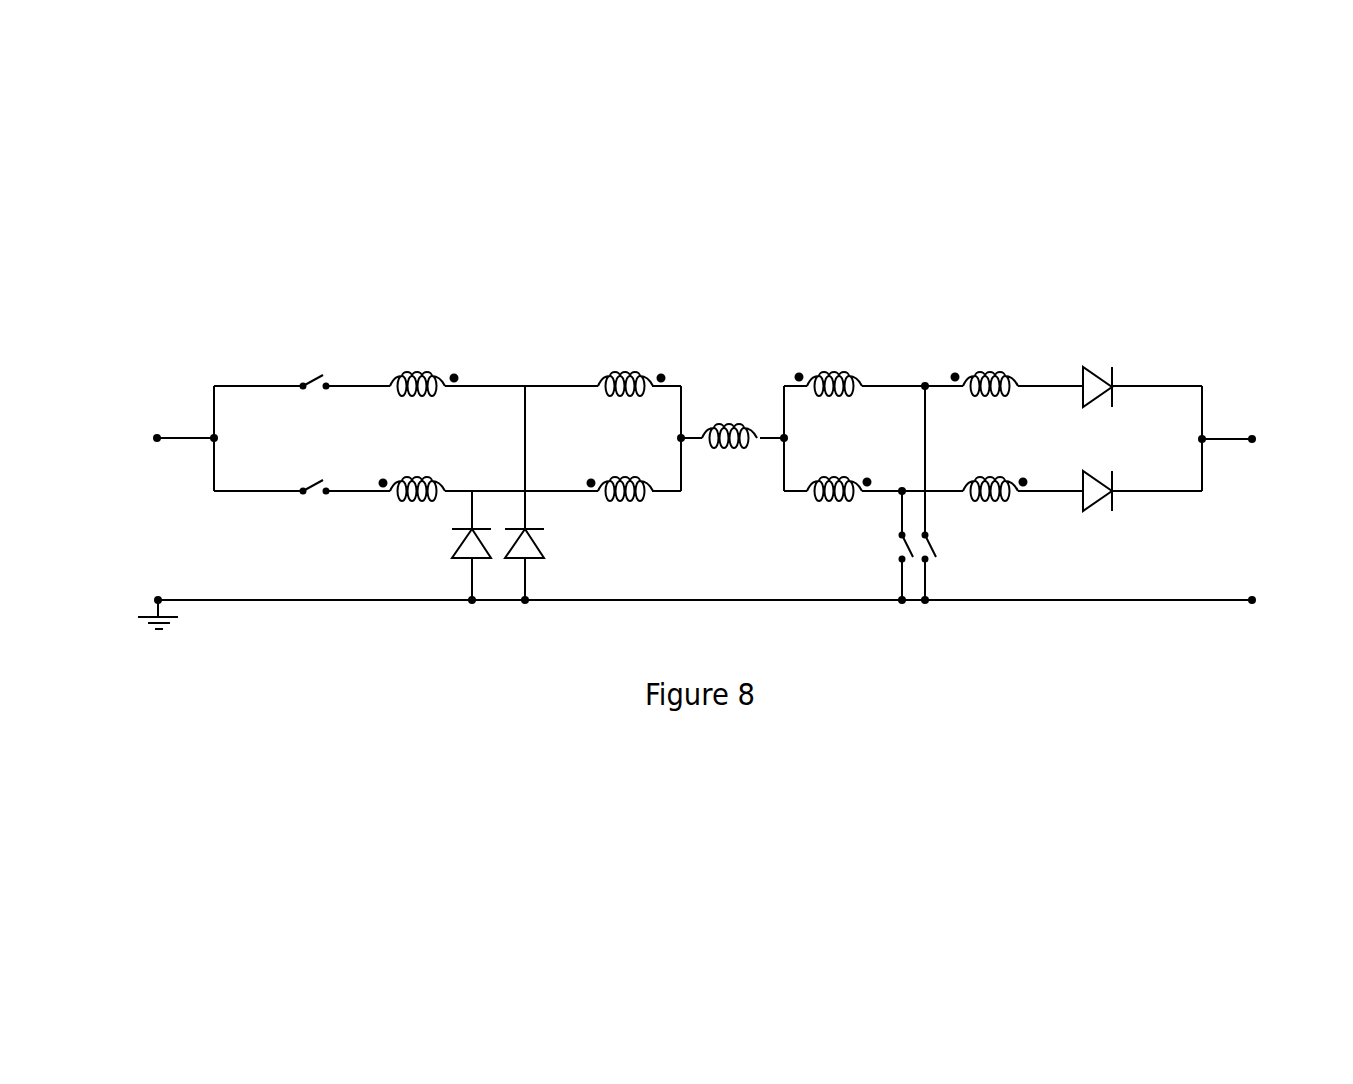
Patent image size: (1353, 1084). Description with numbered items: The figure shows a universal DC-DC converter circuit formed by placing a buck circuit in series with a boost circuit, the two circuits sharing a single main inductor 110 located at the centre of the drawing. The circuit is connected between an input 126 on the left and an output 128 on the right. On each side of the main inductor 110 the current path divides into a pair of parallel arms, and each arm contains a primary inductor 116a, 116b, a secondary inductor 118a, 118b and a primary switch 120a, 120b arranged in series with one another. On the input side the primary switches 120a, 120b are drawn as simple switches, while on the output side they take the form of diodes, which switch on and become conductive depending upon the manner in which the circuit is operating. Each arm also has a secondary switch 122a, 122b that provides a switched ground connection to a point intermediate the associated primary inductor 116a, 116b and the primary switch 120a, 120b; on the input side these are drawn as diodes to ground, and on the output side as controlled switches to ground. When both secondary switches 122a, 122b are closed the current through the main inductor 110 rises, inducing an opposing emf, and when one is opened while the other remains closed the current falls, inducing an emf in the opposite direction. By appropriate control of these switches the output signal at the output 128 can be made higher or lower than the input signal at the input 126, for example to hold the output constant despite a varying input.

The main inductor 110 is at (731, 412).
The primary inductor 116a is at (622, 376).
The primary inductor 116b is at (627, 505).
The secondary inductor 118a is at (414, 377).
The secondary inductor 118b is at (412, 503).
The primary switch 120a is at (312, 380).
The primary switch 120b is at (313, 493).
The secondary switch 122a is at (545, 548).
The secondary switch 122b is at (450, 548).
The input 126 is at (170, 513).
The output 128 is at (1237, 516).